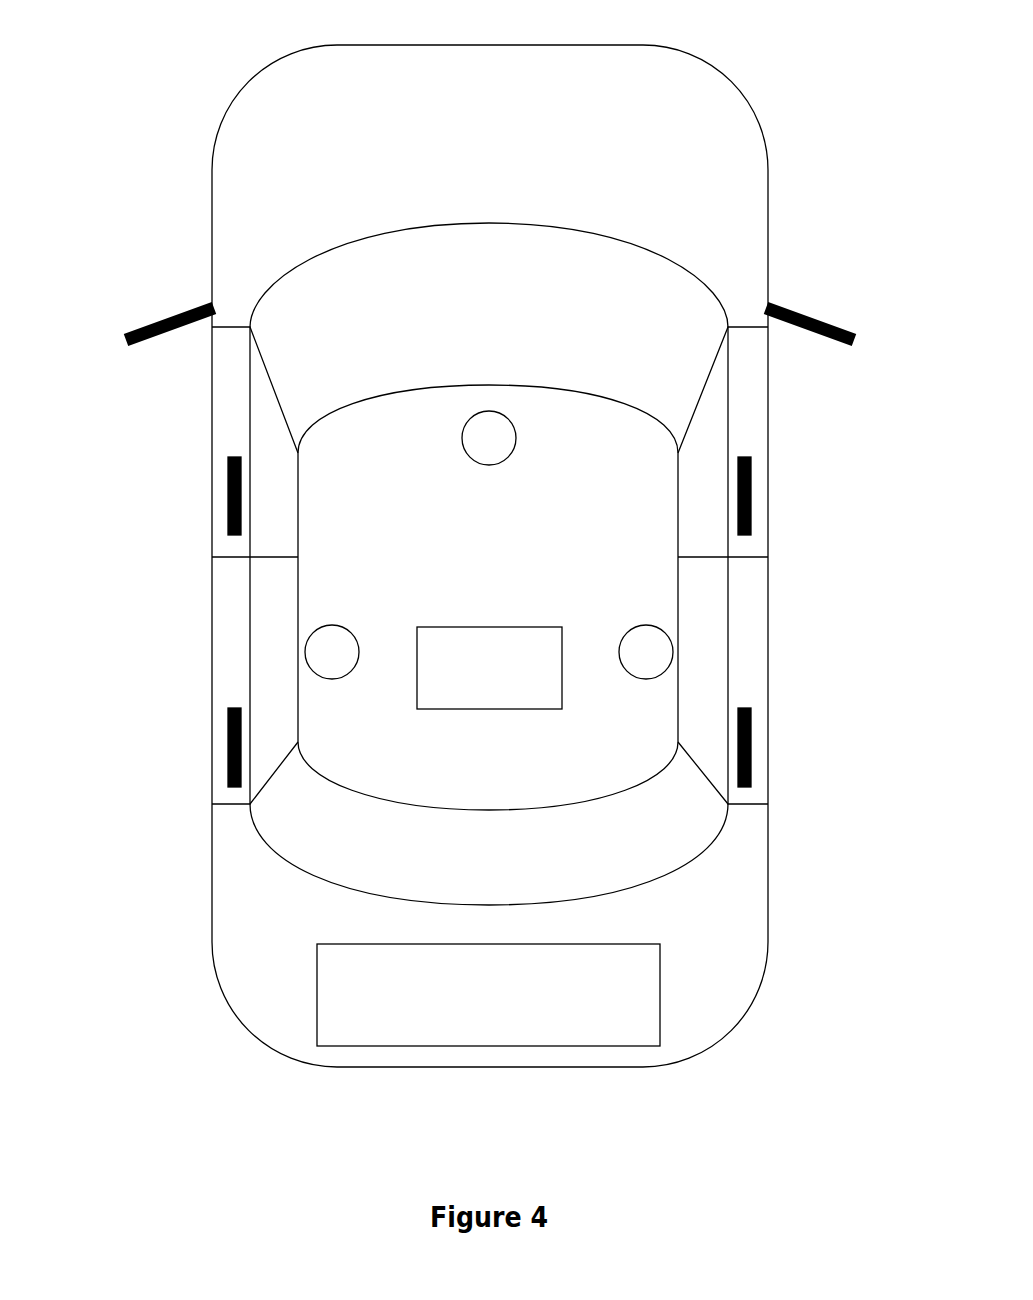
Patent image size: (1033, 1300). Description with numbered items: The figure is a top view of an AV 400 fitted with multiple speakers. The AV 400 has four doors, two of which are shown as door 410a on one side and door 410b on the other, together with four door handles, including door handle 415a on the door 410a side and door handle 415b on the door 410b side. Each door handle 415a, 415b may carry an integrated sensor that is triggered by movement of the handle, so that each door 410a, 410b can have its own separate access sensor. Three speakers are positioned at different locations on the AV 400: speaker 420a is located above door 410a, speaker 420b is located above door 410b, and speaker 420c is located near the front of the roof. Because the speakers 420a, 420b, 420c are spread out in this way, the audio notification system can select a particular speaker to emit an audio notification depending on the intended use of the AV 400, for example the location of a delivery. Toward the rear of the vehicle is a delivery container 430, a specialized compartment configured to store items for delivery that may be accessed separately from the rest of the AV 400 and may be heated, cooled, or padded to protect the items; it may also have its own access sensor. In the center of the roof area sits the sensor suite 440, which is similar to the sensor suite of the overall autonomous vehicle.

The AV 400 is at (205, 73).
The door 410a is at (232, 668).
The door 410b is at (742, 668).
The door handle 415a is at (228, 742).
The door handle 415b is at (752, 740).
The speaker 420a is at (333, 612).
The speaker 420b is at (645, 612).
The speaker 420c is at (489, 402).
The delivery container 430 is at (488, 995).
The sensor suite 440 is at (489, 668).